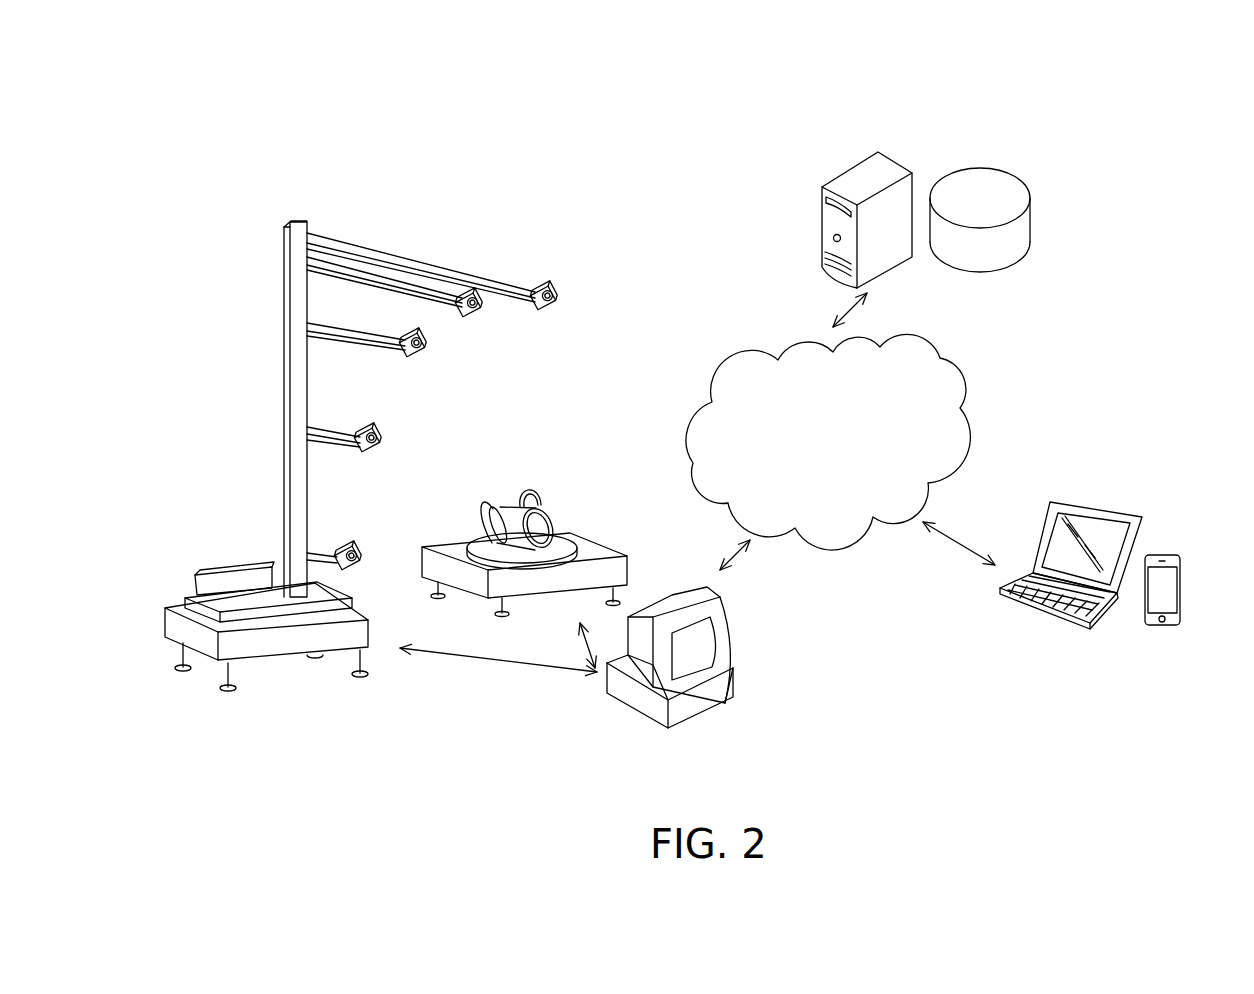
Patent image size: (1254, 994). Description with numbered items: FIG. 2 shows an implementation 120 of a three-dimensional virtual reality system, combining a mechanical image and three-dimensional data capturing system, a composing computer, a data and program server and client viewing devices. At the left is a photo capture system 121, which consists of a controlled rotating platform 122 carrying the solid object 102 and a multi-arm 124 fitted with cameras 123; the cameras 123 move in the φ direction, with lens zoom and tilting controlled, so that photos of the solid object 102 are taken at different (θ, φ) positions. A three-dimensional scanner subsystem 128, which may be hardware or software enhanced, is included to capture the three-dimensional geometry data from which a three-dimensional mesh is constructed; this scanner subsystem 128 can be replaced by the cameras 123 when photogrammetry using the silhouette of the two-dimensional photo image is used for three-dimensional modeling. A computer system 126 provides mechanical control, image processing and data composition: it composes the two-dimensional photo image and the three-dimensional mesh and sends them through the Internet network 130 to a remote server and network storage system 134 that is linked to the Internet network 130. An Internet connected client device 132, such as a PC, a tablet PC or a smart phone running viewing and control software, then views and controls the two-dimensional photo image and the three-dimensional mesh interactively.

The solid object 102 is at (543, 530).
The implementation 120 is at (1130, 774).
The photo capture system 121 is at (458, 752).
The controlled rotating platform 122 is at (598, 555).
The cameras 123 is at (354, 550).
The multi-arm 124 is at (284, 363).
The computer system 126 is at (725, 632).
The 3D scanner subsystem 128 is at (228, 568).
The Internet network 130 is at (687, 430).
The Internet connected client device 132 is at (1108, 474).
The remote server and network storage system 134 is at (944, 147).